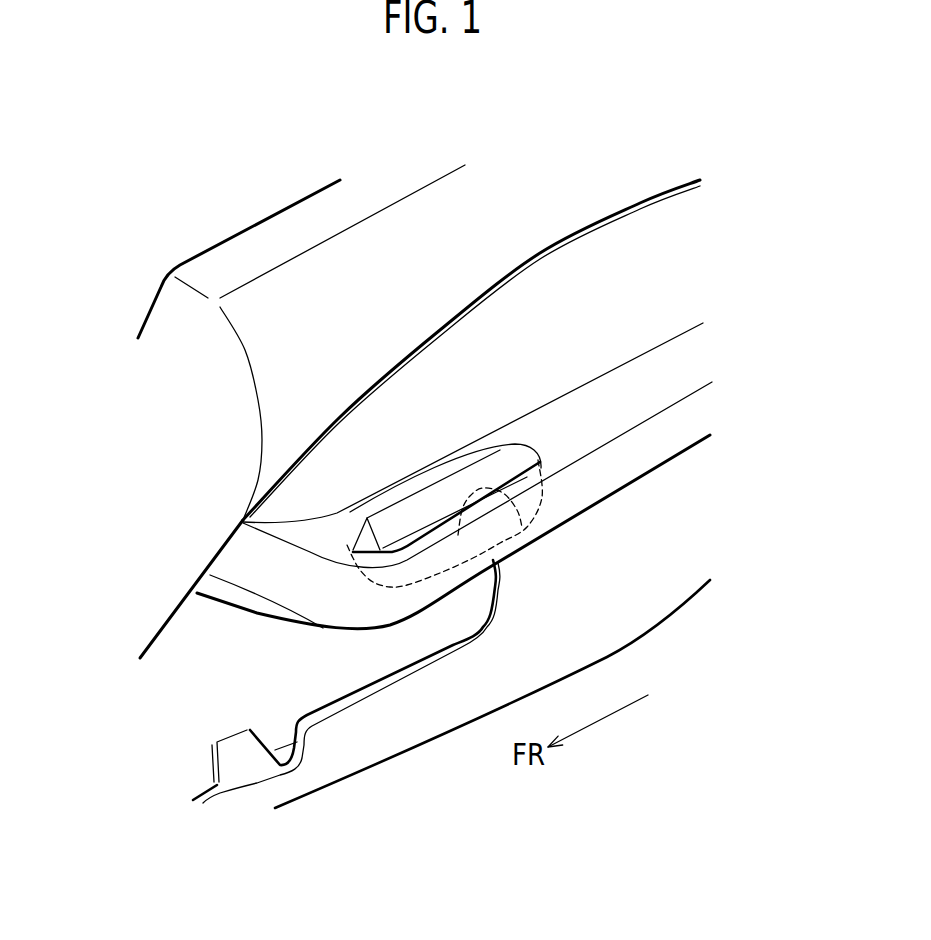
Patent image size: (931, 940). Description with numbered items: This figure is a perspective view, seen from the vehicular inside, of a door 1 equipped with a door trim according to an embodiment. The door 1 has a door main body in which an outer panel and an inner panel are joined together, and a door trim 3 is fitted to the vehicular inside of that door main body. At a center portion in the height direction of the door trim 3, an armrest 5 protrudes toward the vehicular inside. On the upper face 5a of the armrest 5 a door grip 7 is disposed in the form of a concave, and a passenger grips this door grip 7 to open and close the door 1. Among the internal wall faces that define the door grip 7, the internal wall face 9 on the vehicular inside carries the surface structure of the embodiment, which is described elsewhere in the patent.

The door 1 is at (148, 312).
The door trim 3 is at (543, 333).
The armrest 5 is at (519, 445).
The upper face 5a is at (598, 421).
The door grip 7 is at (504, 525).
The internal wall face 9 is at (522, 527).